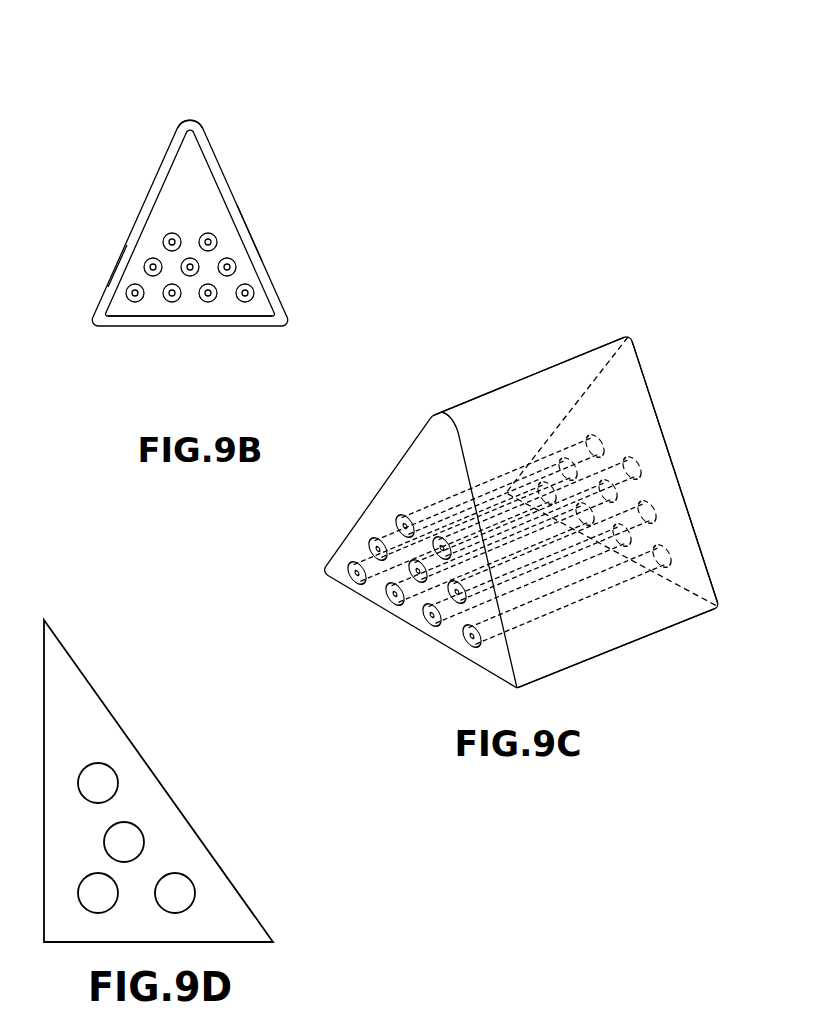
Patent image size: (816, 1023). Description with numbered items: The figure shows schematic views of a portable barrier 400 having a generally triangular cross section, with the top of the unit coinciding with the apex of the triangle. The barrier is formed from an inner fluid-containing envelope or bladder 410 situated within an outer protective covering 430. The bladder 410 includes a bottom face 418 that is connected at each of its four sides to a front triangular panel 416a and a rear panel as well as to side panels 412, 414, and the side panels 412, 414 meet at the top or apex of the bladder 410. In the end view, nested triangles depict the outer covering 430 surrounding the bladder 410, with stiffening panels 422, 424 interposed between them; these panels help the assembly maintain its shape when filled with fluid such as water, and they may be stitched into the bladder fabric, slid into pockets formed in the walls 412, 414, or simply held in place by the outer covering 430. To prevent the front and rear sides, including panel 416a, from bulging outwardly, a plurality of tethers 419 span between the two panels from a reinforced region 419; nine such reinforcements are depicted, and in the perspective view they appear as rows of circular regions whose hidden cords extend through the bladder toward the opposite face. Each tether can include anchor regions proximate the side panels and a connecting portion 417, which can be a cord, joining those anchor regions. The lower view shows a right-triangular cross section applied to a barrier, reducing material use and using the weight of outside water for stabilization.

In FIG. 9B, the triangular prism assembly 400 is at (181, 204).
In FIG. 9C, the inner fluid containing envelope or bladder 410 is at (518, 464).
In FIG. 9B, the side panel 412 is at (242, 225).
In FIG. 9C, the side panel 412 is at (653, 488).
In FIG. 9B, the side panel 414 is at (120, 277).
In FIG. 9C, the side panel 414 is at (446, 403).
In FIG. 9C, the front triangular panel 416a is at (463, 615).
In FIG. 9C, the connecting portion 417 is at (692, 613).
In FIG. 9B, the bottom face 418 is at (238, 318).
In FIG. 9C, the bottom face 418 is at (600, 635).
In FIG. 9B, the tethers / reinforced region 419 is at (208, 302).
In FIG. 9C, the tethers / reinforced region 419 is at (360, 585).
In FIG. 9D, the tethers / reinforced region 419 is at (174, 887).
In FIG. 9B, the stiffening panel 422 is at (233, 193).
In FIG. 9B, the stiffening panel 424 is at (145, 203).
In FIG. 9B, the outer protective covering 430 is at (220, 150).